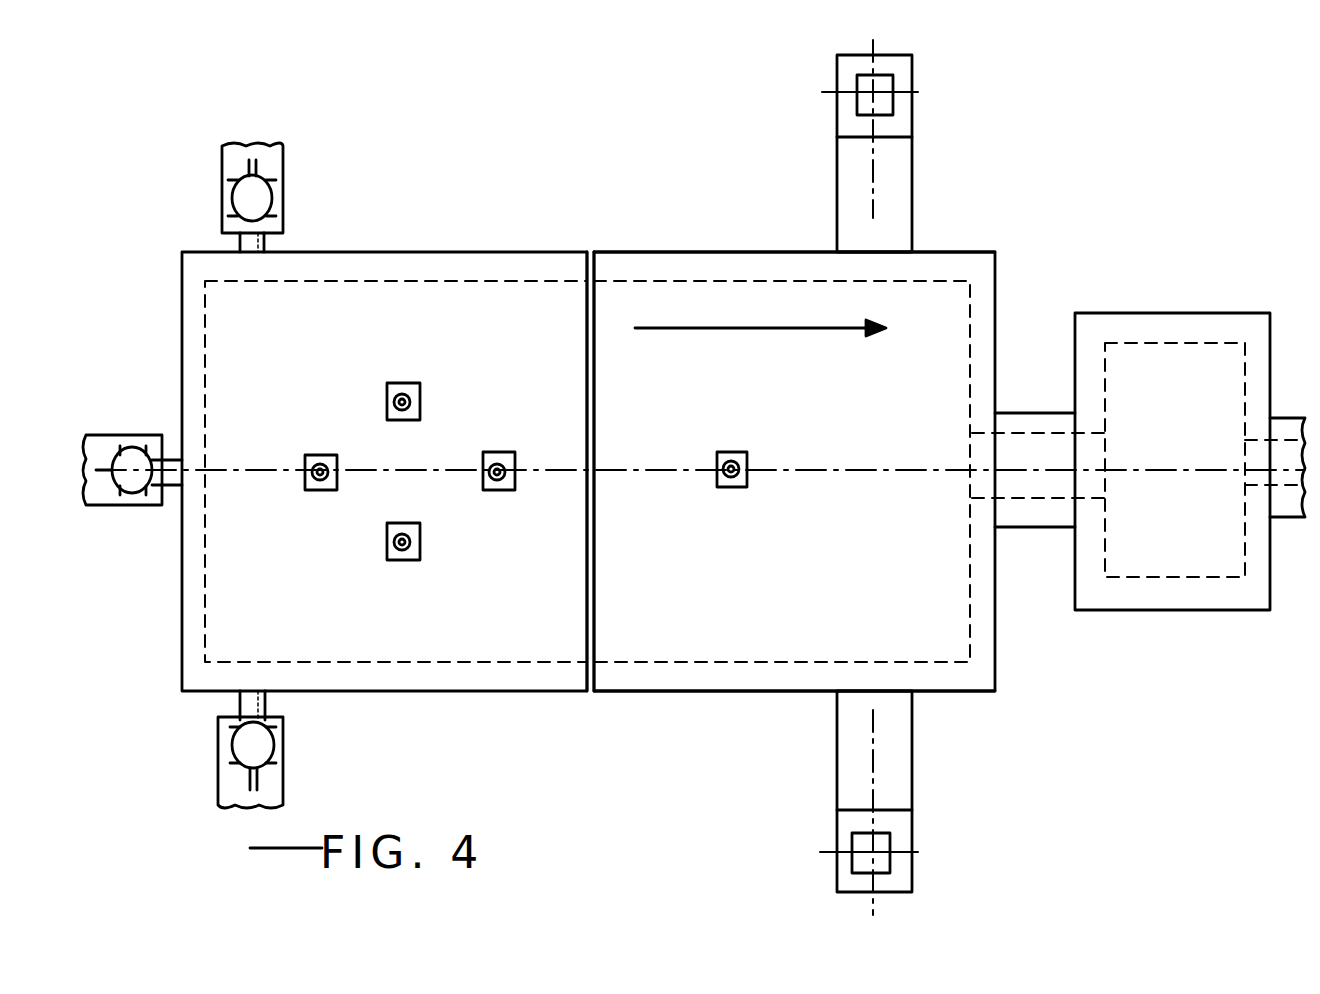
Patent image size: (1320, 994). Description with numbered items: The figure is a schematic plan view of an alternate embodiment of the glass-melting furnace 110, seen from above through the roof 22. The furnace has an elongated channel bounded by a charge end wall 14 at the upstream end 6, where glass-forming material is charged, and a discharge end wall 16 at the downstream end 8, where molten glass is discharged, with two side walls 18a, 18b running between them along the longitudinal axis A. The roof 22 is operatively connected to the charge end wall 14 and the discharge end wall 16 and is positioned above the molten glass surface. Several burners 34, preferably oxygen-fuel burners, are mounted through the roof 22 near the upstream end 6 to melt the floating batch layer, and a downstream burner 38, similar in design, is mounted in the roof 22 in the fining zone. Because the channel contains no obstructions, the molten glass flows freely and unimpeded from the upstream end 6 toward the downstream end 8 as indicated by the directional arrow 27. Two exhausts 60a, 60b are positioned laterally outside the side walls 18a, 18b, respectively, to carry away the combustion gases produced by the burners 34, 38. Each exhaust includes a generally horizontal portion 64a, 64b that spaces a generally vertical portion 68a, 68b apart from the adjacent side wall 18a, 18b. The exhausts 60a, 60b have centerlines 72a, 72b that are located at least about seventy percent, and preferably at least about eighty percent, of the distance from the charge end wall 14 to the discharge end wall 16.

The upstream end 6 is at (164, 240).
The downstream end 8 is at (895, 146).
The charge end wall 14 is at (182, 590).
The discharge end wall 16 is at (995, 622).
The side wall 18a is at (655, 262).
The side wall 18b is at (718, 676).
The roof 22 is at (432, 295).
The directional arrow 27 is at (716, 330).
The burners 34 is at (405, 382).
The downstream burner 38 is at (736, 487).
The exhaust 60a is at (912, 112).
The exhaust 60b is at (912, 822).
The generally horizontal portion 64a is at (912, 172).
The generally horizontal portion 64b is at (912, 740).
The generally vertical portion 68a is at (836, 80).
The generally vertical portion 68b is at (912, 874).
The centerline 72a is at (910, 68).
The centerline 72b is at (854, 882).
The glass-melting furnace 110 is at (377, 160).
The longitudinal axis A is at (203, 458).